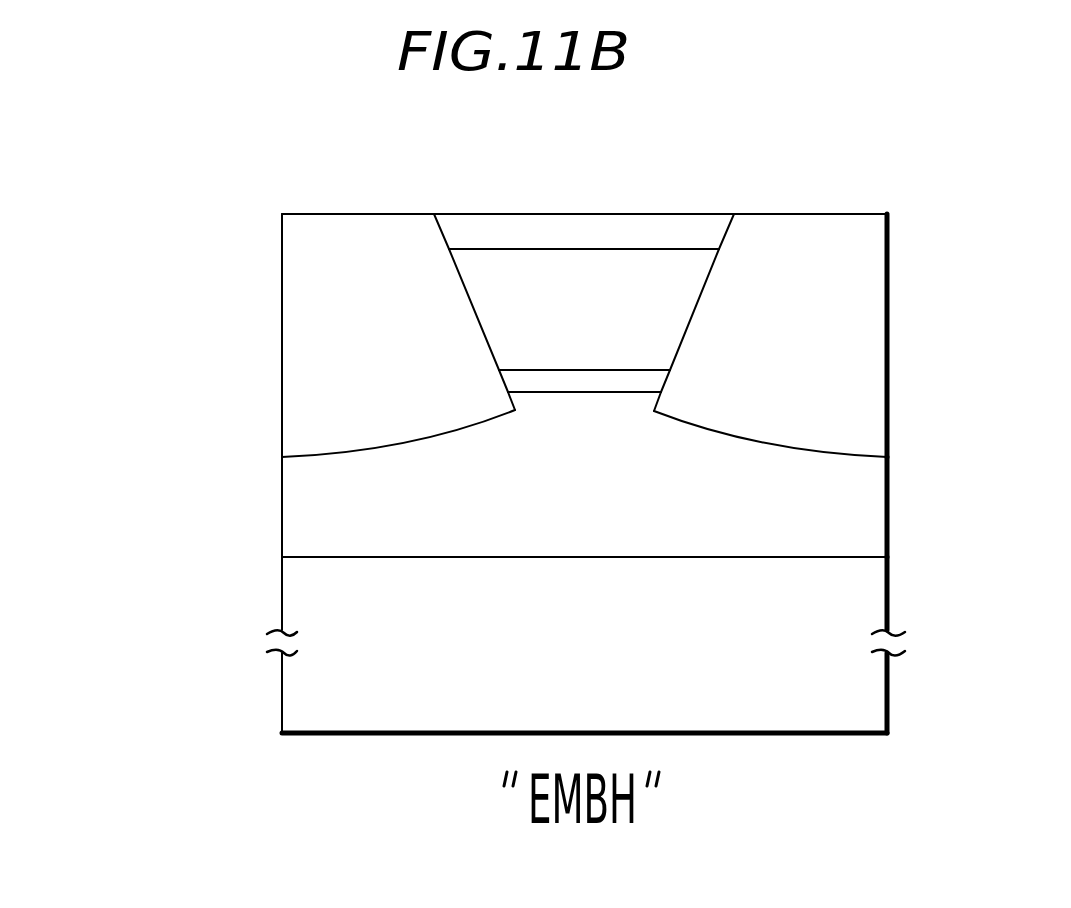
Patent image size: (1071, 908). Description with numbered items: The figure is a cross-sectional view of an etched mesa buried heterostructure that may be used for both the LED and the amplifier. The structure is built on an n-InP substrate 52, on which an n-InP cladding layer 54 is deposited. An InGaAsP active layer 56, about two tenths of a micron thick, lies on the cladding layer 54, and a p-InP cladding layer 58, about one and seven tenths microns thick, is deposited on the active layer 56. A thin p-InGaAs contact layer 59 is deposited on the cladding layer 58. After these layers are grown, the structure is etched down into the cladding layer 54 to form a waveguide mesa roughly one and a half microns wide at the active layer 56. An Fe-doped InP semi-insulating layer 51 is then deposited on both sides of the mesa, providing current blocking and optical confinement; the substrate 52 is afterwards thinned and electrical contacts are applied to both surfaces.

The Fe-doped InP semi-insulating layer 51 is at (337, 318).
The n-InP substrate 52 is at (307, 682).
The n-InP cladding layer 54 is at (318, 508).
The InGaAsP active layer 56 is at (572, 383).
The p-InP cladding layer 58 is at (608, 299).
The p-InGaAs contact layer 59 is at (488, 225).